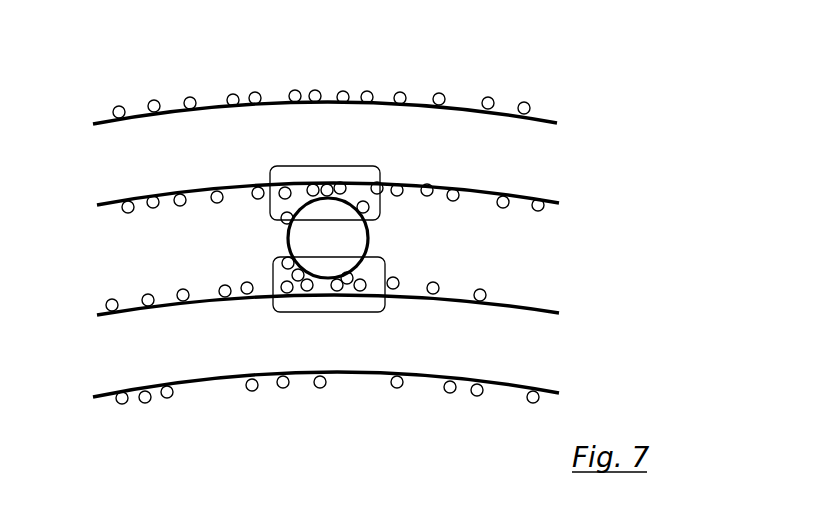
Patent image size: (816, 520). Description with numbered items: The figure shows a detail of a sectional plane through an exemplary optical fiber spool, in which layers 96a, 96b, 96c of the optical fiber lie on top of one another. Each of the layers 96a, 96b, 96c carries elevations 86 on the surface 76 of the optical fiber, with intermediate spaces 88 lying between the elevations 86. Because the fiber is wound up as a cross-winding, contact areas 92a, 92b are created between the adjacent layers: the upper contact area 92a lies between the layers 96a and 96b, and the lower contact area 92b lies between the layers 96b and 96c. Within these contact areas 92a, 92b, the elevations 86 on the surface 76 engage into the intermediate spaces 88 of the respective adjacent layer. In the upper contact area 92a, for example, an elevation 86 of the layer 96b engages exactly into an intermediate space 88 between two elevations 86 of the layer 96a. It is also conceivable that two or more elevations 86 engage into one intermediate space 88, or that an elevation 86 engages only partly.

The surface 76 is at (552, 121).
The elevations 86 is at (393, 96).
The intermediate spaces 88 is at (208, 102).
The upper contact area 92a is at (283, 166).
The lower contact area 92b is at (333, 303).
The first layer of the optical fiber 96a is at (418, 141).
The second layer of the optical fiber 96b is at (328, 240).
The third layer of the optical fiber 96c is at (397, 340).